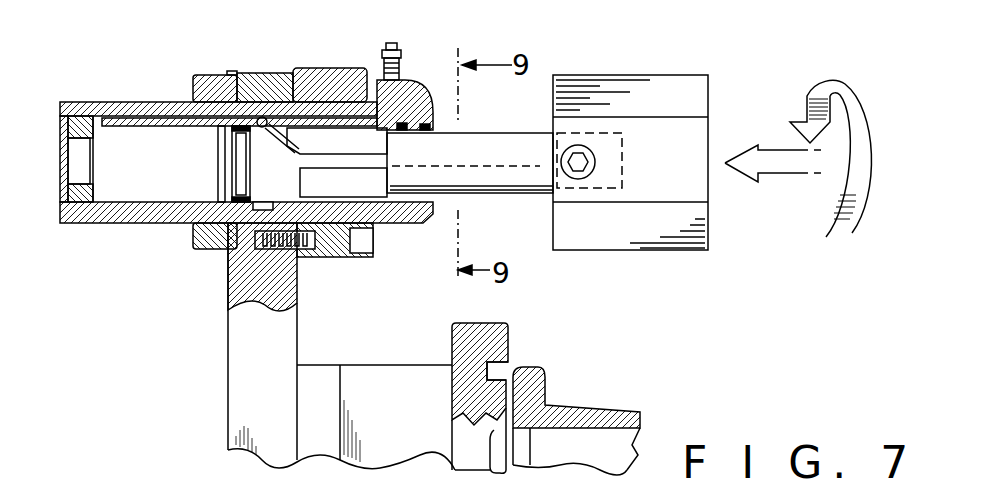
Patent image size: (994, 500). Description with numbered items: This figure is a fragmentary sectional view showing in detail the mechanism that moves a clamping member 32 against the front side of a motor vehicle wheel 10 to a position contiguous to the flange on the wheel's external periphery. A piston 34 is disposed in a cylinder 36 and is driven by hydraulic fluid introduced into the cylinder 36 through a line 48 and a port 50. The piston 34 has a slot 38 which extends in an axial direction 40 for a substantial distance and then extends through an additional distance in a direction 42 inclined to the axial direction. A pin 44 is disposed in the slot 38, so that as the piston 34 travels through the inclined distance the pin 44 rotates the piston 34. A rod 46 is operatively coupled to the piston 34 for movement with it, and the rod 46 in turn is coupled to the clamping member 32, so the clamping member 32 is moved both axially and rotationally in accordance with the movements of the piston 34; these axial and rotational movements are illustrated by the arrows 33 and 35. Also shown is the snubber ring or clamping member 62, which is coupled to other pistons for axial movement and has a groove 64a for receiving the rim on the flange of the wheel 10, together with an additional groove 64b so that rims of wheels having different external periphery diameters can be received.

The motor vehicle wheel 10 is at (632, 414).
The clamping member 32 is at (613, 87).
The axial movement 33 is at (782, 174).
The piston 34 is at (333, 187).
The rotational movement 35 is at (840, 88).
The cylinder 36 is at (100, 203).
The slot 38 is at (289, 165).
The axial direction 40 is at (320, 140).
The inclined direction 42 is at (266, 116).
The pin 44 is at (259, 129).
The rod 46 is at (482, 147).
The line 48 is at (383, 58).
The port 50 is at (400, 116).
The snubber ring or clamping member 62 is at (452, 347).
The groove 64a is at (500, 365).
The groove 64b is at (491, 432).